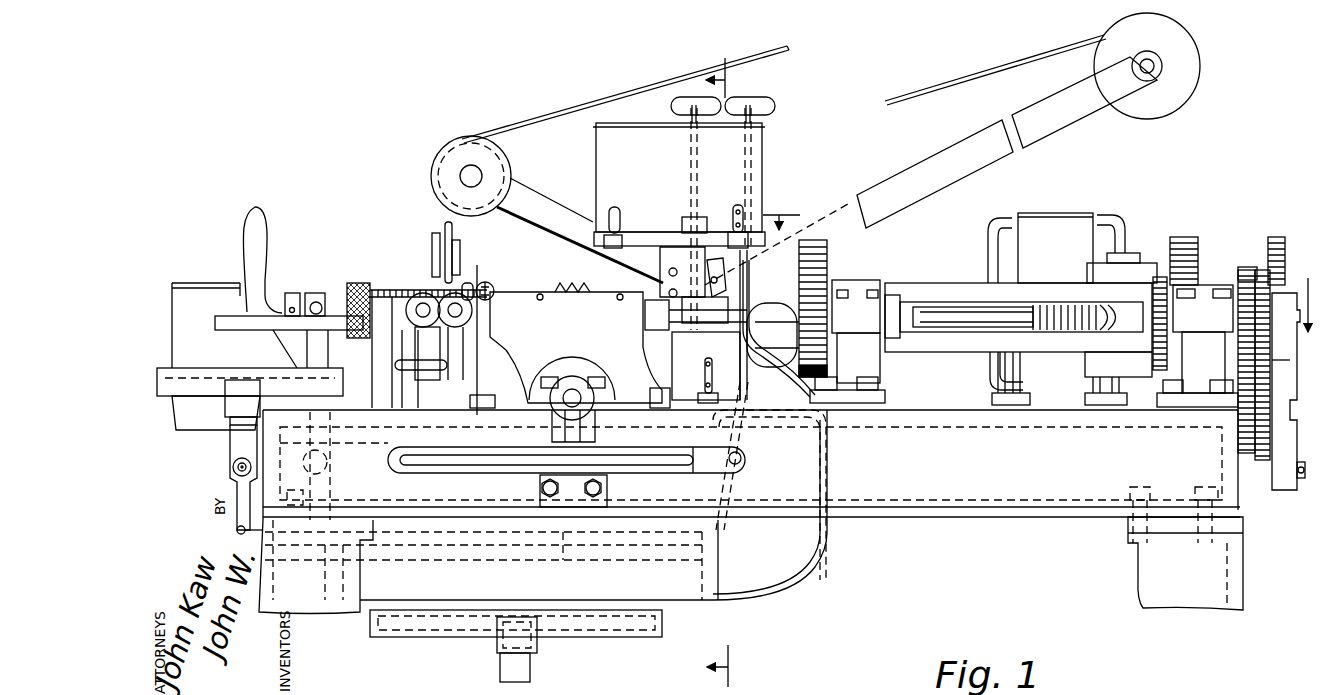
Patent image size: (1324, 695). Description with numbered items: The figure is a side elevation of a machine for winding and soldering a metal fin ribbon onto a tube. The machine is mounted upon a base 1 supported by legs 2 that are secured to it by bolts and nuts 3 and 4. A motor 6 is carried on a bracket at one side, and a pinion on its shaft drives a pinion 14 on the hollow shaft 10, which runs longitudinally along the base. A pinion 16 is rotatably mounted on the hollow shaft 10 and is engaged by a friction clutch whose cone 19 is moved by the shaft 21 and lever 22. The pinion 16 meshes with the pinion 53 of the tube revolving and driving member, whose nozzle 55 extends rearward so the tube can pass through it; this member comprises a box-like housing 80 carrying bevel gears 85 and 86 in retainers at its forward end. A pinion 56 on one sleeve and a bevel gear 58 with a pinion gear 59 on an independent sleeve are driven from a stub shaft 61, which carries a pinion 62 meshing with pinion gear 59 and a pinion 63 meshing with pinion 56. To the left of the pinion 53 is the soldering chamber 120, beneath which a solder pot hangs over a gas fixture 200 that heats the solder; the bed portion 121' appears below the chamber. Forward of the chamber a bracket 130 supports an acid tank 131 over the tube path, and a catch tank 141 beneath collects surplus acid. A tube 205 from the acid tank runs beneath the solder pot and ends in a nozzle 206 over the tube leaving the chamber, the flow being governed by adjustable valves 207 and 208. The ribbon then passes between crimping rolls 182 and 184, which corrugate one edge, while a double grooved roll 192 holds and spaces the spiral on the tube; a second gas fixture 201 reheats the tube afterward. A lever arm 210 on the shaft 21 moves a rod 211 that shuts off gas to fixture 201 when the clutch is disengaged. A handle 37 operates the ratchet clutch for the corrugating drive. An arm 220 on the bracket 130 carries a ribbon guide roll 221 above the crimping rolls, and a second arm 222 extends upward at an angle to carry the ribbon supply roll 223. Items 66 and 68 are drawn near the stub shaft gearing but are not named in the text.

The base 1 is at (1028, 505).
The legs 2 is at (1247, 580).
The bolts 3 is at (1195, 480).
The nuts 4 is at (1193, 563).
The motor 6 is at (1040, 230).
The hollow shaft 10 is at (734, 374).
The pinion 14 is at (1200, 240).
The pinion 16 is at (824, 244).
The cone 19 is at (800, 243).
The shaft 21 is at (747, 460).
The lever 22 is at (648, 467).
The handle 37 is at (247, 213).
The pinion 53 is at (827, 273).
The nozzle 55 is at (773, 335).
The pinion 56 is at (1267, 241).
The bevel gear 58 is at (1165, 277).
The pinion gear 59 is at (1247, 268).
The stub shaft 61 is at (1293, 410).
The pinion 62 is at (1248, 455).
The pinion 63 is at (1263, 462).
The bracket 66 is at (1293, 392).
The bolt 68 is at (1301, 470).
The housing 80 is at (940, 290).
The bevel gear 85 is at (1086, 273).
The bevel gear 86 is at (1083, 361).
The soldering chamber 120 is at (608, 362).
The bed member 121' is at (639, 580).
The bracket 130 is at (703, 323).
The acid tank 131 is at (753, 160).
The catch tank 141 is at (706, 367).
The crimping roll 182 is at (482, 300).
The second crimping roll 184 is at (423, 297).
The double grooved roll 192 is at (428, 240).
The gas fixture 200 is at (585, 637).
The second gas fixture 201 is at (163, 377).
The tube 205 is at (788, 597).
The nozzle 206 is at (473, 287).
The adjustable valve 207 is at (681, 108).
The adjustable valve 208 is at (773, 100).
The lever arm 210 is at (733, 496).
The rod 211 is at (560, 565).
The arm 220 is at (547, 200).
The ribbon guide roll 221 is at (473, 137).
The second arm 222 is at (960, 157).
The ribbon supply roll 223 is at (1155, 82).